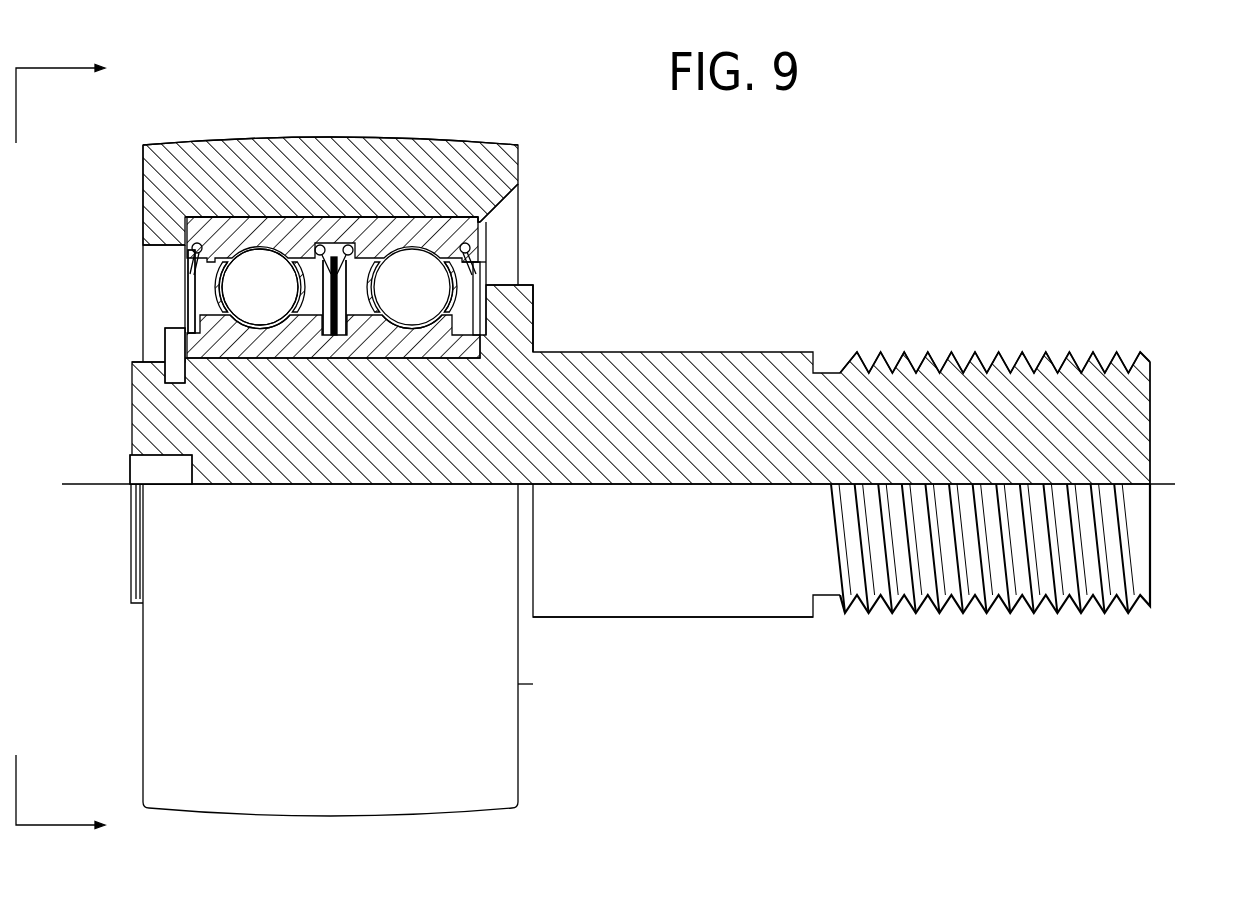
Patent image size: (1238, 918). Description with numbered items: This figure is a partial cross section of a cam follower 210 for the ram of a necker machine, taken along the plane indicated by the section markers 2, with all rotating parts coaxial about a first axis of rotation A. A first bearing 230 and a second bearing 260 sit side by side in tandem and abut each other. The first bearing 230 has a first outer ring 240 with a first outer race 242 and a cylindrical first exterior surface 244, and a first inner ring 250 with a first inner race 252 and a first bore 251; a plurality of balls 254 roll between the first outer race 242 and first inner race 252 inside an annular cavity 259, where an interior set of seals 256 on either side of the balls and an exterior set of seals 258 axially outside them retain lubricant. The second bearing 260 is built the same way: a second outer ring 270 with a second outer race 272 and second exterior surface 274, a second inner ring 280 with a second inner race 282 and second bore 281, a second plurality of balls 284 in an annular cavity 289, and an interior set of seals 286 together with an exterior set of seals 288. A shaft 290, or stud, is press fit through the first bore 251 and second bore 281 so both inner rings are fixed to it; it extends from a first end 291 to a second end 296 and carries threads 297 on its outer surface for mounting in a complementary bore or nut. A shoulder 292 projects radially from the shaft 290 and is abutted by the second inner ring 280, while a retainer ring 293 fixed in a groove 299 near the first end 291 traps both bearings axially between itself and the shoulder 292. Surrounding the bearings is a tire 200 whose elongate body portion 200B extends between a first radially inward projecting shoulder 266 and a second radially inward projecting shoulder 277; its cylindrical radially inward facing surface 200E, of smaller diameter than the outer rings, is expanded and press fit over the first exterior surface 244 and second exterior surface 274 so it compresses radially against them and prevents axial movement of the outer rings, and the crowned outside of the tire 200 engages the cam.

The section line 2- 2 is at (60, 445).
The first axis of rotation A is at (110, 484).
The tire 200 is at (145, 150).
The radially inward facing surface 200E is at (330, 145).
The elongate body portion 200B is at (362, 145).
The cam follower 210 is at (780, 207).
The first bearing 230 is at (163, 278).
The first outer ring 240 is at (210, 285).
The first outer race 242 is at (226, 262).
The first exterior surface 244 is at (262, 250).
The first inner ring 250 is at (285, 335).
The first bore 251 is at (248, 320).
The first inner race 252 is at (245, 340).
The balls 254 is at (240, 340).
The interior set of seals 256 is at (228, 320).
The exterior set of seals 258 is at (187, 305).
The annular cavity 259 is at (188, 290).
The second bearing 260 is at (497, 257).
The first radially inward projecting shoulder 266 is at (160, 212).
The second outer ring 270 is at (505, 145).
The second outer race 272 is at (498, 202).
The second exterior surface 274 is at (425, 215).
The second radially inward projecting shoulder 277 is at (510, 193).
The second inner ring 280 is at (336, 340).
The second bore 281 is at (380, 470).
The second inner race 282 is at (345, 336).
The second plurality of balls 284 is at (445, 282).
The interior set of seals 286 is at (445, 350).
The exterior set of seals 288 is at (320, 350).
The annular cavity 289 is at (462, 306).
The shaft 290 is at (682, 598).
The first end 291 is at (133, 455).
The shoulder 292 is at (516, 332).
The retainer ring 293 is at (172, 372).
The second end 296 is at (1150, 440).
The threads 297 is at (986, 352).
The groove 299 is at (176, 386).